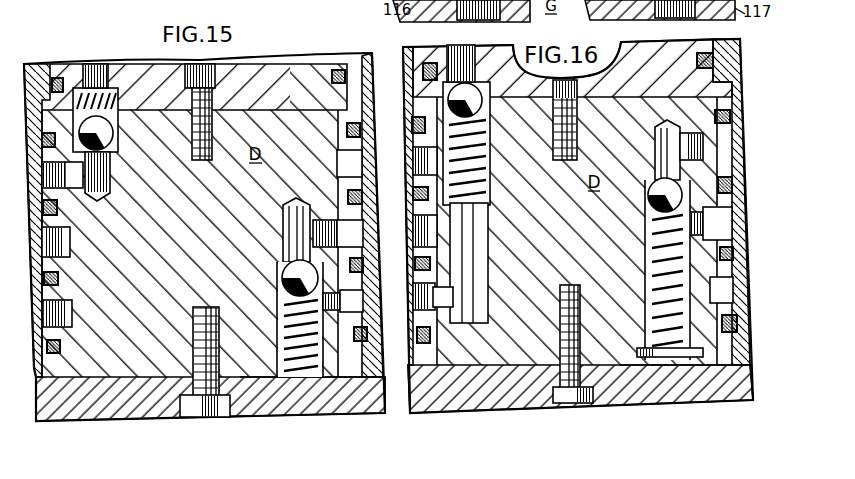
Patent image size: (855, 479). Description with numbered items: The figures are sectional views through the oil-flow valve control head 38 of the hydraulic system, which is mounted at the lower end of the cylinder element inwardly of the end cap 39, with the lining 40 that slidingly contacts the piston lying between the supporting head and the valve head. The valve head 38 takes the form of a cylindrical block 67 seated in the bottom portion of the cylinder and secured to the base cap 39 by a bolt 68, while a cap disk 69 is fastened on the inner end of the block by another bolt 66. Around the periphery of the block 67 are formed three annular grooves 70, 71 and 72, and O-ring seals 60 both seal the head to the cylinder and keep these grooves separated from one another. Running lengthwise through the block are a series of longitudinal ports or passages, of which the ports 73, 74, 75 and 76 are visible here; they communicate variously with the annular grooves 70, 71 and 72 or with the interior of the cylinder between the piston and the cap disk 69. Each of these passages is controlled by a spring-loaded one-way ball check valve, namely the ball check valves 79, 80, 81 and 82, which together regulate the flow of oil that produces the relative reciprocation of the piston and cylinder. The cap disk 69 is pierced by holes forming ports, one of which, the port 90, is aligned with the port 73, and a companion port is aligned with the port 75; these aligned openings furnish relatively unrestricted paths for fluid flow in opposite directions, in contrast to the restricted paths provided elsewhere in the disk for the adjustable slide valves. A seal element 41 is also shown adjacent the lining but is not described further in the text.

In FIG. 15, the valve head 38 is at (184, 247).
In FIG. 16, the valve head 38 is at (531, 280).
In FIG. 15, the end cap 39 is at (306, 398).
In FIG. 16, the end cap 39 is at (673, 386).
In FIG. 15, the lining 40 is at (351, 54).
In FIG. 16, the lining 40 is at (420, 45).
In FIG. 15, the seal ring 41 is at (57, 77).
In FIG. 15, the O-ring seals 60 is at (78, 345).
In FIG. 16, the O-ring seals 60 is at (747, 330).
In FIG. 15, the bolt 66 is at (238, 63).
In FIG. 16, the bolt 66 is at (578, 128).
In FIG. 15, the cylindrical block 67 is at (130, 362).
In FIG. 16, the cylindrical block 67 is at (527, 333).
In FIG. 15, the bolt 68 is at (208, 418).
In FIG. 16, the bolt 68 is at (578, 404).
In FIG. 15, the cap disk 69 is at (273, 67).
In FIG. 16, the cap disk 69 is at (633, 85).
In FIG. 15, the annular groove 70 is at (45, 176).
In FIG. 16, the annular groove 70 is at (413, 160).
In FIG. 15, the annular groove 71 is at (46, 241).
In FIG. 16, the annular groove 71 is at (414, 231).
In FIG. 15, the annular groove 72 is at (45, 313).
In FIG. 16, the annular groove 72 is at (416, 306).
In FIG. 15, the longitudinal port 73 is at (111, 175).
In FIG. 15, the longitudinal port 74 is at (283, 228).
In FIG. 16, the longitudinal port 75 is at (480, 231).
In FIG. 16, the longitudinal port 76 is at (645, 252).
In FIG. 15, the ball check valve 79 is at (110, 142).
In FIG. 15, the ball check valve 80 is at (283, 270).
In FIG. 16, the ball check valve 81 is at (482, 112).
In FIG. 16, the ball check valve 82 is at (650, 192).
In FIG. 15, the port 90 is at (98, 72).
In FIG. 16, the port 90 is at (470, 62).